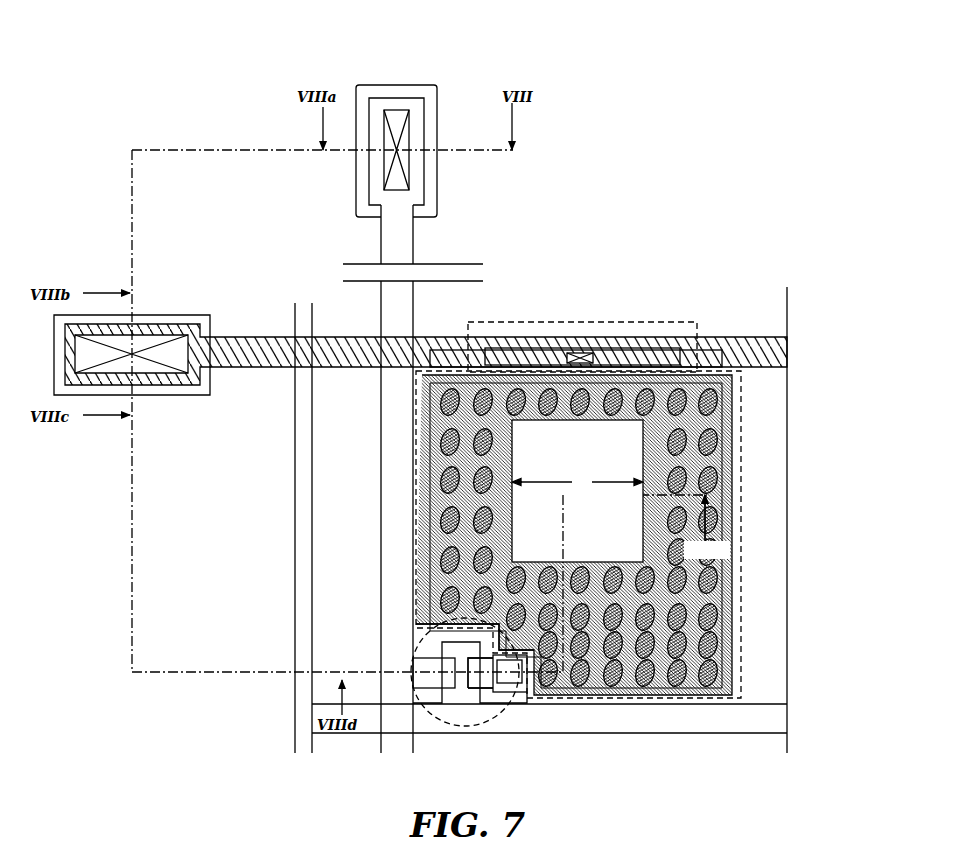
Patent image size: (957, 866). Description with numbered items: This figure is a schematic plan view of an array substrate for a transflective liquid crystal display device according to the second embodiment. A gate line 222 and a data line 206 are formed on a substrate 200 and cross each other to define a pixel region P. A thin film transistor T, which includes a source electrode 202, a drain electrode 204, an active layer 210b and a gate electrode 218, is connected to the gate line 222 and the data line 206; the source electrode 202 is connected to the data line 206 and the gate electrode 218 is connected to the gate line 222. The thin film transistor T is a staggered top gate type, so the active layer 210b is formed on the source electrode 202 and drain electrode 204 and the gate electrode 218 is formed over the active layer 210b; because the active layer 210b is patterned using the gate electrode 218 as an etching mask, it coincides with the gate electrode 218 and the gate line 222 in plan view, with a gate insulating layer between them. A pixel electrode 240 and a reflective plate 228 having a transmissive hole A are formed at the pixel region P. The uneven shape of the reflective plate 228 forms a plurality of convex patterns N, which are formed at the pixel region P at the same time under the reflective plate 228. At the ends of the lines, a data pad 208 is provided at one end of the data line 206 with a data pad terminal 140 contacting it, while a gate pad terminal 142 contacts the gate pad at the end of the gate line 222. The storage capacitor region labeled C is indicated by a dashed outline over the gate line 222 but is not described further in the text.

The data pad terminal 140 is at (437, 93).
The data pad 208 is at (424, 113).
The gate pad terminal 142 is at (175, 315).
The gate line 222 is at (180, 383).
The data line 206 is at (382, 523).
The pixel electrode 240 is at (722, 359).
The substrate 200 is at (651, 526).
The reflective plate 228 is at (624, 535).
The source electrode 202 is at (427, 682).
The drain electrode 204 is at (527, 692).
The active layer 210b is at (418, 630).
The gate electrode 218 is at (366, 661).
The thin film transistor T is at (480, 712).
The storage capacitor C is at (642, 322).
The convex patterns N is at (732, 582).
The pixel region P is at (742, 650).
The transmissive hole A is at (577, 482).